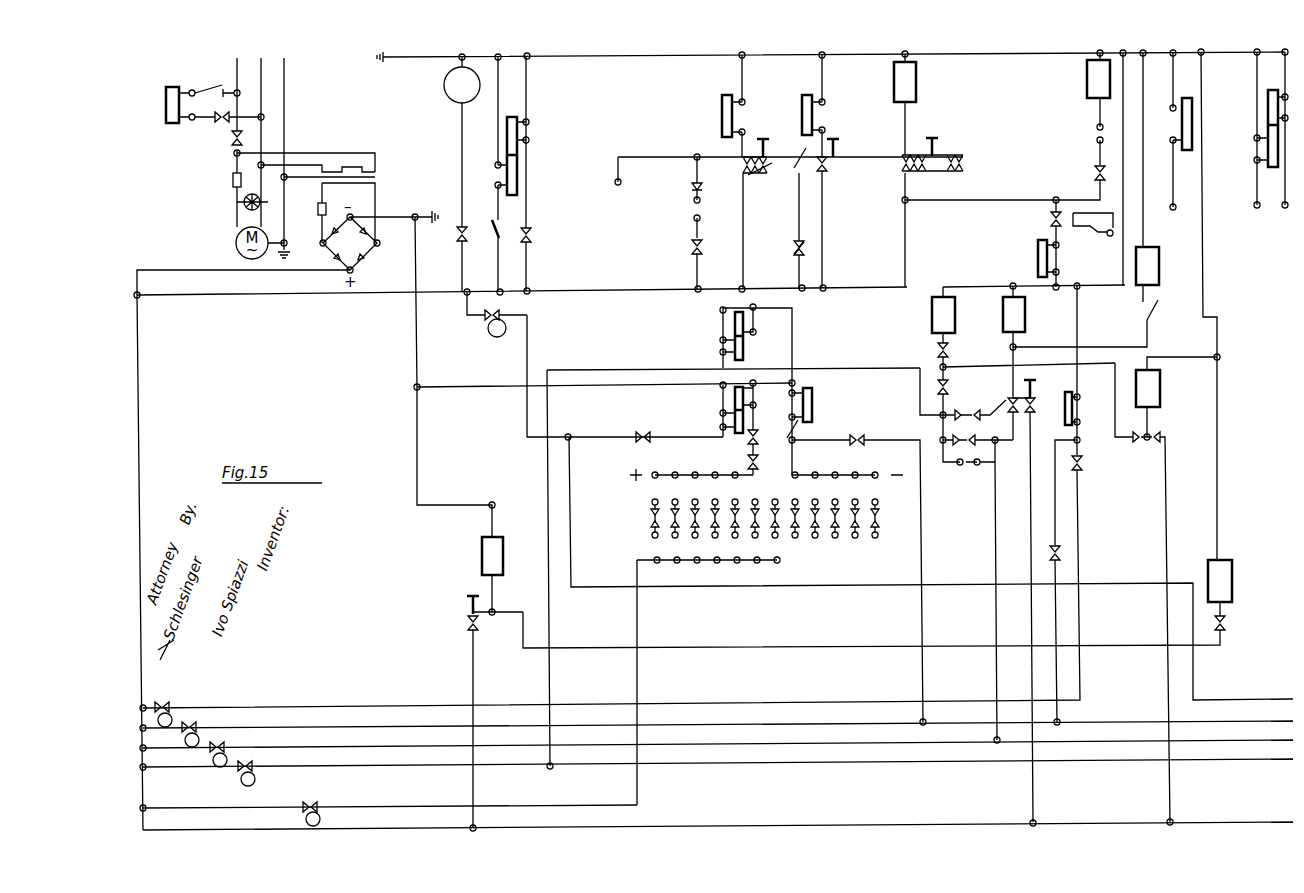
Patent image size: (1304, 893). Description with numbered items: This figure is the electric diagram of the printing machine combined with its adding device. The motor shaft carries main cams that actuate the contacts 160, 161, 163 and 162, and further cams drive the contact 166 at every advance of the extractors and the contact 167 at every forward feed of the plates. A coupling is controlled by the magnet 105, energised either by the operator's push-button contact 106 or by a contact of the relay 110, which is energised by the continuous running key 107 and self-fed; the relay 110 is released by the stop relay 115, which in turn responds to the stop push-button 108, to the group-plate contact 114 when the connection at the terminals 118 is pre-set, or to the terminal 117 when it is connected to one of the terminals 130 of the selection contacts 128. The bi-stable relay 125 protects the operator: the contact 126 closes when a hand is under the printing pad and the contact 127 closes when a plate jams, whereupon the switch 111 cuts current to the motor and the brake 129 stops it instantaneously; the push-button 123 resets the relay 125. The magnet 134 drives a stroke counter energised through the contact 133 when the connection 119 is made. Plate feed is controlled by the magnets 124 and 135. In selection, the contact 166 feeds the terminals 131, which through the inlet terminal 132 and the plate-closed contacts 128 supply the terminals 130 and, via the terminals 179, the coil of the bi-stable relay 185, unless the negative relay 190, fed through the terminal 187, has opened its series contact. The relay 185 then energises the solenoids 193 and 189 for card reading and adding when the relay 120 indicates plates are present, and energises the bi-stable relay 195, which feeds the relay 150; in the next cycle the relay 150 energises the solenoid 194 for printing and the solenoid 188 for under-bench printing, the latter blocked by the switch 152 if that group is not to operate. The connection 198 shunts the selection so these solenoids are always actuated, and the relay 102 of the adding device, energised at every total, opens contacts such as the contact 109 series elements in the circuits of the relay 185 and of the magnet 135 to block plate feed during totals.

The bi-stable relay of the adding device 102 is at (1268, 122).
The magnet 105 is at (918, 82).
The contact 106 is at (930, 158).
The key 107 is at (830, 167).
The push-button 108 is at (795, 165).
The relay 109 is at (1169, 131).
The relay 110 is at (815, 118).
The switch 111 is at (203, 105).
The contact 114 is at (693, 248).
The stop relay 115 is at (735, 118).
The terminal 117 is at (622, 184).
The terminals 118 is at (693, 209).
The connection 119 is at (1096, 136).
The relay 120 is at (1066, 264).
The push-button 123 is at (495, 224).
The magnet 124 is at (503, 551).
The bi-stable relay 125 is at (517, 138).
The contact 126 is at (532, 237).
The contact 127 is at (511, 256).
The contacts 128 is at (765, 518).
The brake 129 is at (445, 85).
The terminals 130 is at (644, 499).
The terminals 131 is at (798, 557).
The inlet terminal 132 is at (644, 532).
The contact 133 is at (1094, 171).
The magnet 134 is at (1088, 86).
The magnet 135 is at (1232, 581).
The relay 150 is at (1073, 412).
The switch 152 is at (1148, 316).
The contact 160 is at (160, 708).
The contact 161 is at (716, 728).
The contact 162 is at (716, 748).
The contact 163 is at (716, 767).
The contact 166 is at (388, 807).
The contact 167 is at (497, 314).
The terminals 179 is at (694, 472).
The bi-stable relay 185 is at (735, 410).
The terminal 187 is at (848, 472).
The solenoid 188 is at (1160, 283).
The solenoid 189 is at (1160, 390).
The negative relay 190 is at (812, 400).
The solenoid 193 is at (1023, 333).
The solenoid 194 is at (1031, 342).
The bi-stable relay 195 is at (735, 330).
The connection 198 is at (969, 469).